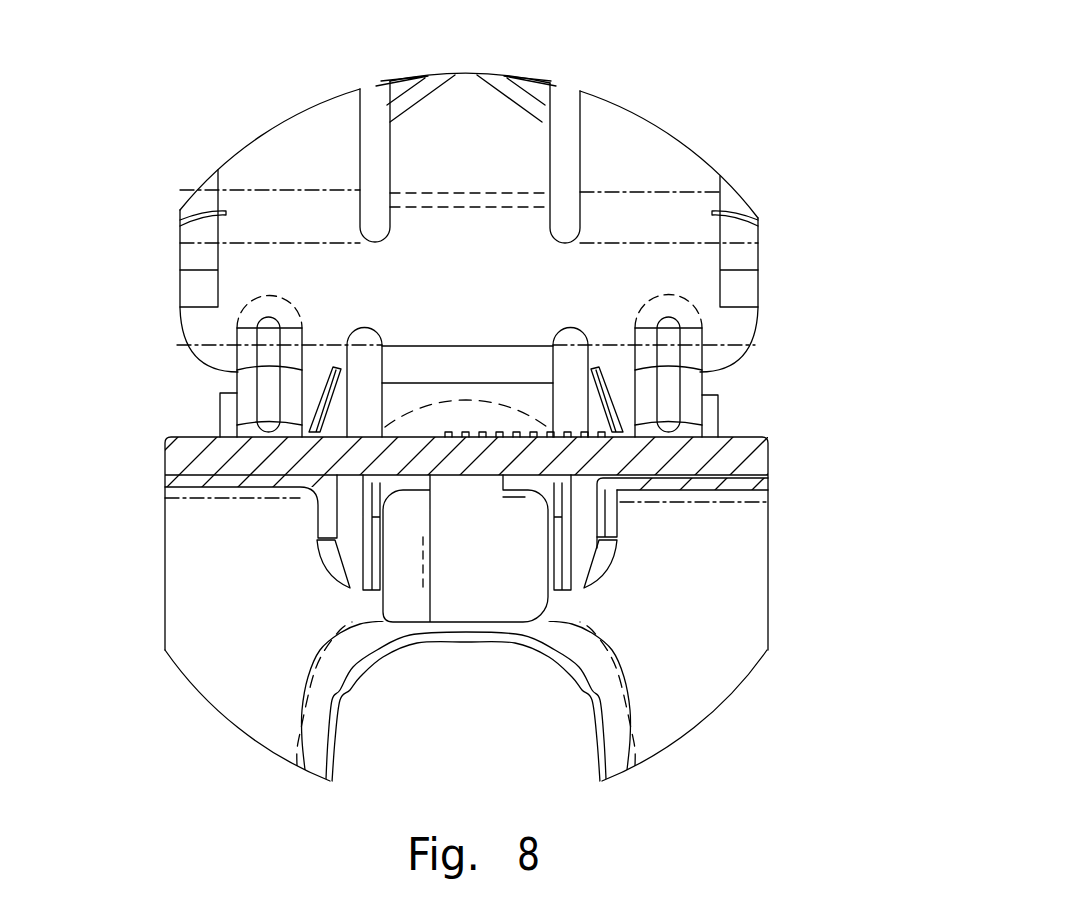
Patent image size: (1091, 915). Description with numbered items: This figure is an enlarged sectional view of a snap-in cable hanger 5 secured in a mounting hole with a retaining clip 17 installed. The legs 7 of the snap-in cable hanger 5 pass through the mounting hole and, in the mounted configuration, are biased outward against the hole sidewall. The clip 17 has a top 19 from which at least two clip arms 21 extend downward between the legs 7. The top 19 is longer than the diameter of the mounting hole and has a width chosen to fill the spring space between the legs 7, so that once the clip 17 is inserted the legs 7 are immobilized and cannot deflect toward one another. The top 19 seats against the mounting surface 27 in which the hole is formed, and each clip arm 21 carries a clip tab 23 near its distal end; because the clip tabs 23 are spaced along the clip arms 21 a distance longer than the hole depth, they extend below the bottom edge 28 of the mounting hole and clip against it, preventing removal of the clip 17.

The snap-in cable hanger 5 is at (615, 138).
The leg 7 is at (447, 593).
The clip 17 is at (743, 463).
The top 19 is at (193, 437).
The clip arm 21 is at (348, 583).
The clip tab 23 is at (327, 557).
The mounting surface 27 is at (755, 475).
The bottom edge 28 is at (617, 537).